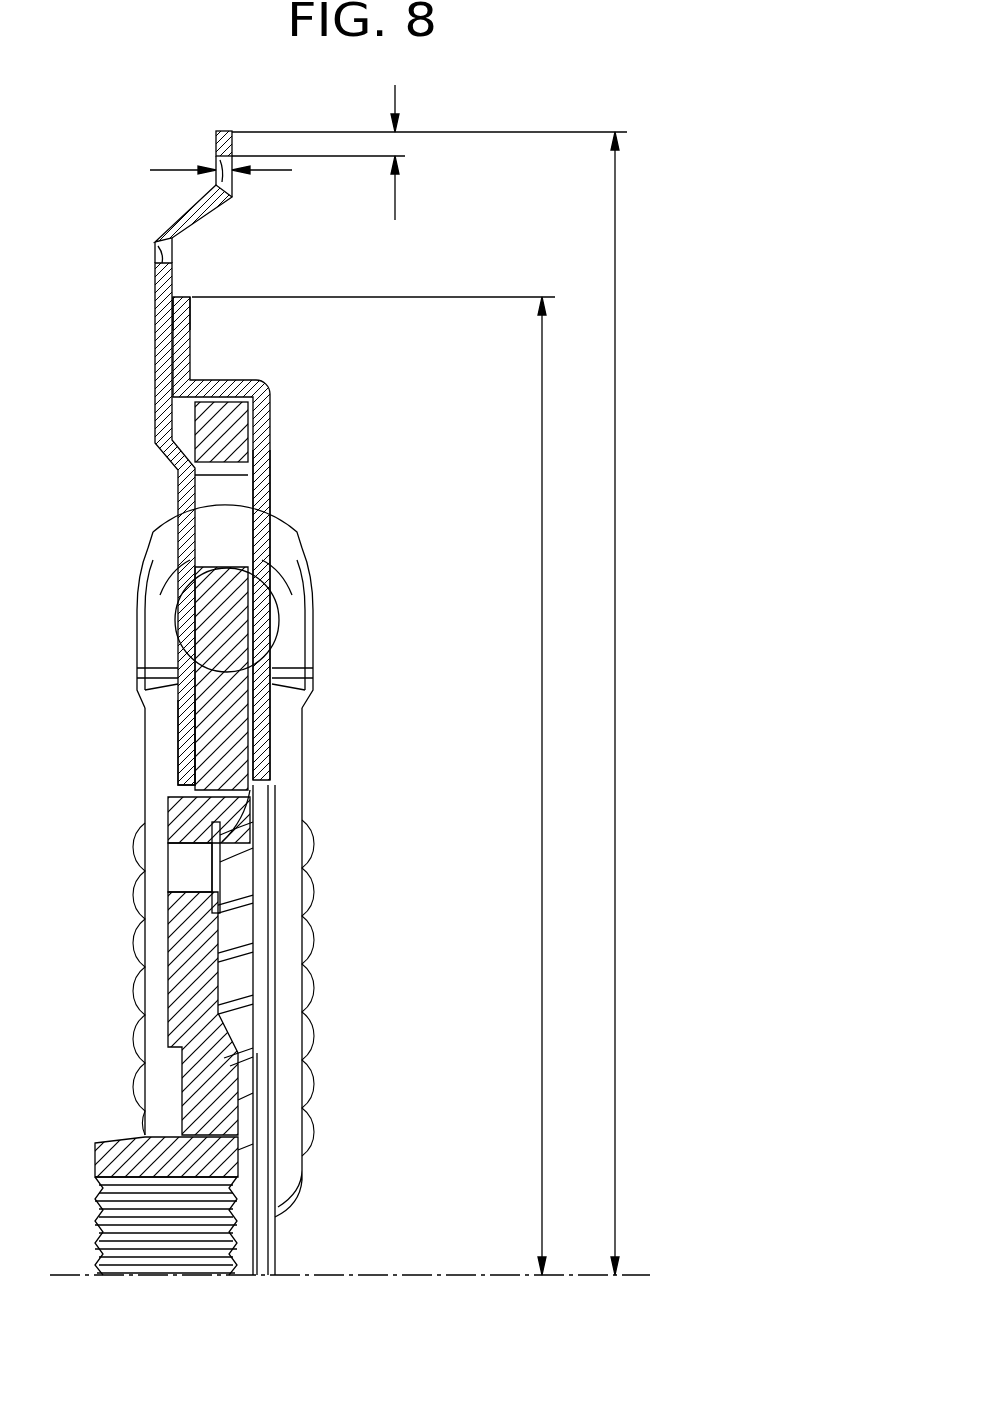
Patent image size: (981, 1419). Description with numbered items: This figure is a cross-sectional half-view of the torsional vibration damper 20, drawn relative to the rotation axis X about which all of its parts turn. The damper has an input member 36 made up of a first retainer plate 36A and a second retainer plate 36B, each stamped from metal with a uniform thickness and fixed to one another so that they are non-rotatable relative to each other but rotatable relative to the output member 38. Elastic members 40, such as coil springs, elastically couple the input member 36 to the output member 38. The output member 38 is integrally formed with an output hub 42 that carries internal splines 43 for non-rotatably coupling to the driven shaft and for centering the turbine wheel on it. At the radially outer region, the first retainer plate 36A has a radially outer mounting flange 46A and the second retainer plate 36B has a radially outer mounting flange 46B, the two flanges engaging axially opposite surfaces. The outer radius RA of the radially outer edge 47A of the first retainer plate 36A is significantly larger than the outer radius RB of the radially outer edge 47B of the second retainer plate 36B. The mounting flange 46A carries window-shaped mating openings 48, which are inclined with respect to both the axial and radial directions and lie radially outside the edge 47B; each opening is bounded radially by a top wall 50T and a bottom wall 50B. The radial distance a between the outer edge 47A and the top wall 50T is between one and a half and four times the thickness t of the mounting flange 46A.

The torsional vibration damper 20 is at (108, 638).
The input member 36 is at (165, 425).
The first retainer plate 36A is at (185, 724).
The second retainer plate 36B is at (270, 468).
The output member 38 is at (185, 968).
The elastic members 40 is at (305, 600).
The output hub 42 is at (120, 1150).
The internal splines 43 is at (120, 1212).
The radially outer mounting flange 46A is at (157, 335).
The radially outer mounting flange 46B is at (190, 335).
The radially outer edge 47A is at (224, 131).
The radially outer edge 47B is at (183, 295).
The mating openings 48 is at (188, 217).
The top wall 50T is at (232, 197).
The bottom wall 50B is at (155, 245).
The thickness t is at (216, 172).
The radial distance a is at (318, 165).
The outer radius RA is at (615, 706).
The outer radius RB is at (542, 794).
The rotation axis X is at (428, 1274).